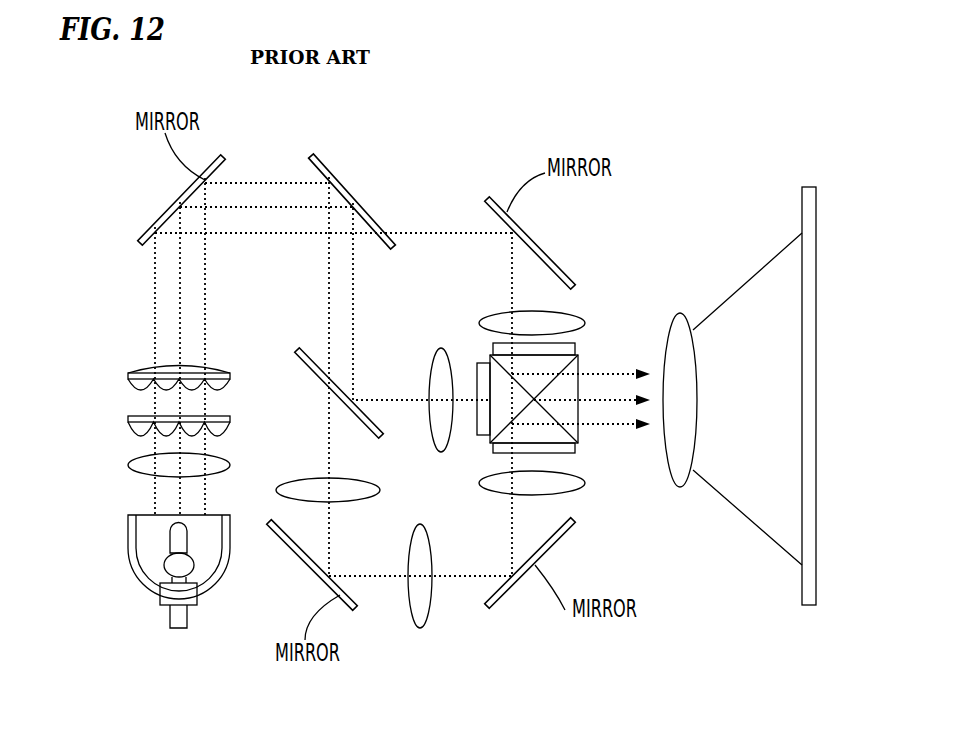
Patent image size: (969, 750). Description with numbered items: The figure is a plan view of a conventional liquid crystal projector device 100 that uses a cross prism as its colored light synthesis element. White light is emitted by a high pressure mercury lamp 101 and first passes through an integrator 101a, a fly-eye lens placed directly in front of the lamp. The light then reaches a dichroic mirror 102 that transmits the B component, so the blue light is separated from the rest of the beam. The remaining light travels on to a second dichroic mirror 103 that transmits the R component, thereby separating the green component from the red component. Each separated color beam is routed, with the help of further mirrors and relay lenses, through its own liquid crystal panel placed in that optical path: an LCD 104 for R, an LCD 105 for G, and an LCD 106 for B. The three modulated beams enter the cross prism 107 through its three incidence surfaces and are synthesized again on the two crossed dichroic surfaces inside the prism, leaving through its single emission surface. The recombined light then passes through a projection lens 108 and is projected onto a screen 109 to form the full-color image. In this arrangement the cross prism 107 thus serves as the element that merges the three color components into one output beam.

The liquid crystal projector device 100 is at (671, 182).
The high pressure mercury lamp 101 is at (145, 543).
The integrator (flyeye lens) 101a is at (130, 372).
The dichroic mirror 102 is at (329, 172).
The dichroic mirror 103 is at (298, 350).
The LCD for R 104 is at (568, 455).
The LCD for G 105 is at (478, 366).
The LCD for B 106 is at (580, 346).
The cross prism 107 is at (580, 358).
The projection lens 108 is at (678, 482).
The screen 109 is at (808, 607).